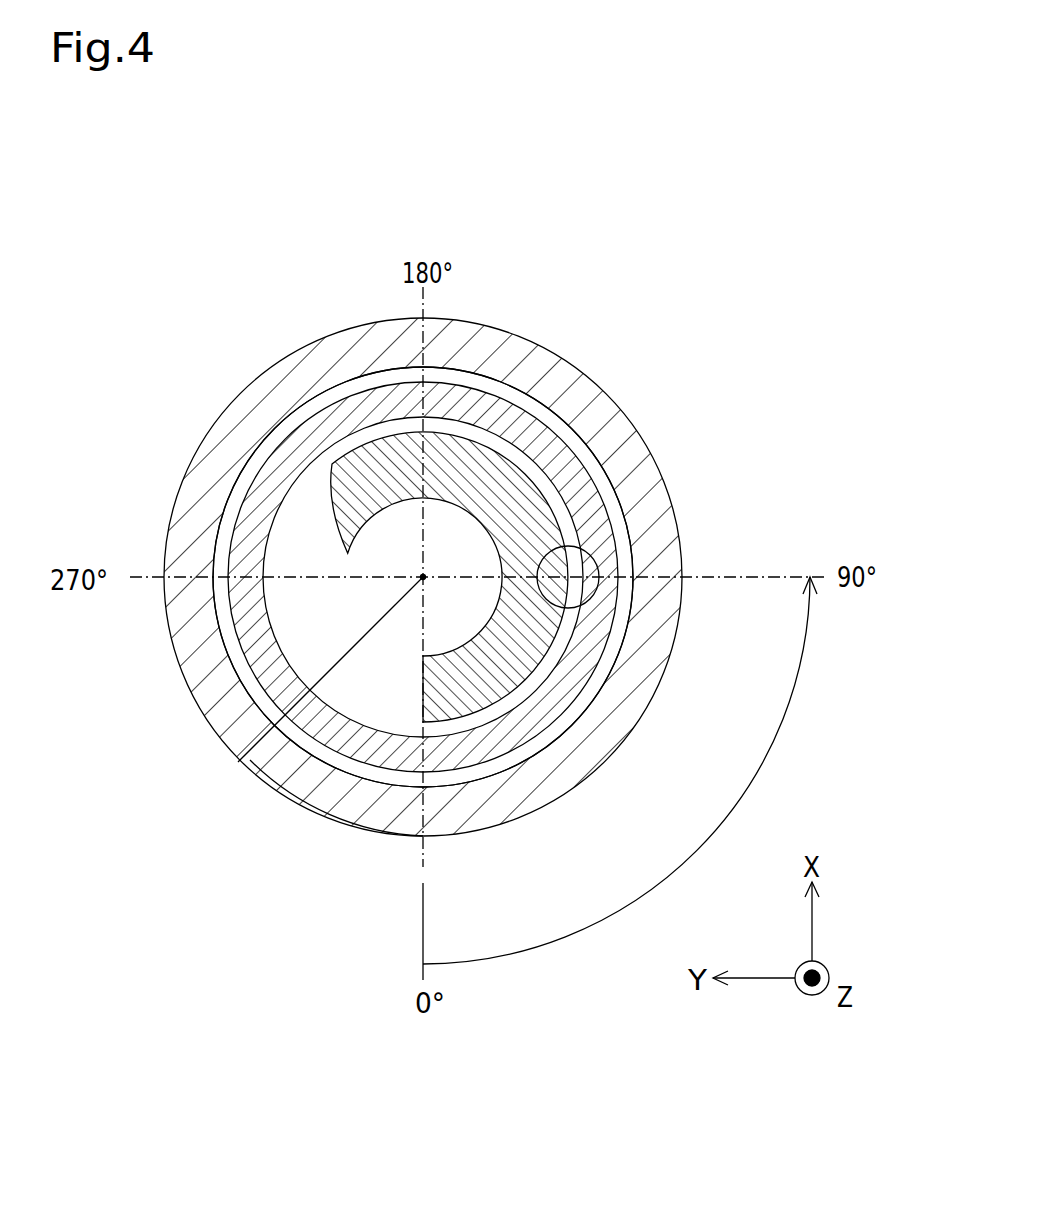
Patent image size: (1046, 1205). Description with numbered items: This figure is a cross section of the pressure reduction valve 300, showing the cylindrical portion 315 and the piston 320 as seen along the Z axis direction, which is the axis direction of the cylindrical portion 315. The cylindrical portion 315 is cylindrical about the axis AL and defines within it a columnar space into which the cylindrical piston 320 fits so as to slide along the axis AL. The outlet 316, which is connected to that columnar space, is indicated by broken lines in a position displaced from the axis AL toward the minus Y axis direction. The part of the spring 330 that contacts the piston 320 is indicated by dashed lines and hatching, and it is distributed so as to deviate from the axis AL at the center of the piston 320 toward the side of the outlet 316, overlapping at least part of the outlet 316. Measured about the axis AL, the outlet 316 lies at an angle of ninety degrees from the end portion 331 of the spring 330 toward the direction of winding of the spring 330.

The pressure reduction valve 300 is at (745, 252).
The cylindrical portion 315 is at (627, 421).
The piston 320 is at (617, 484).
The outlet 316 is at (618, 543).
The spring 330 is at (535, 660).
The end portion 331 is at (306, 815).
The axis AL is at (238, 762).